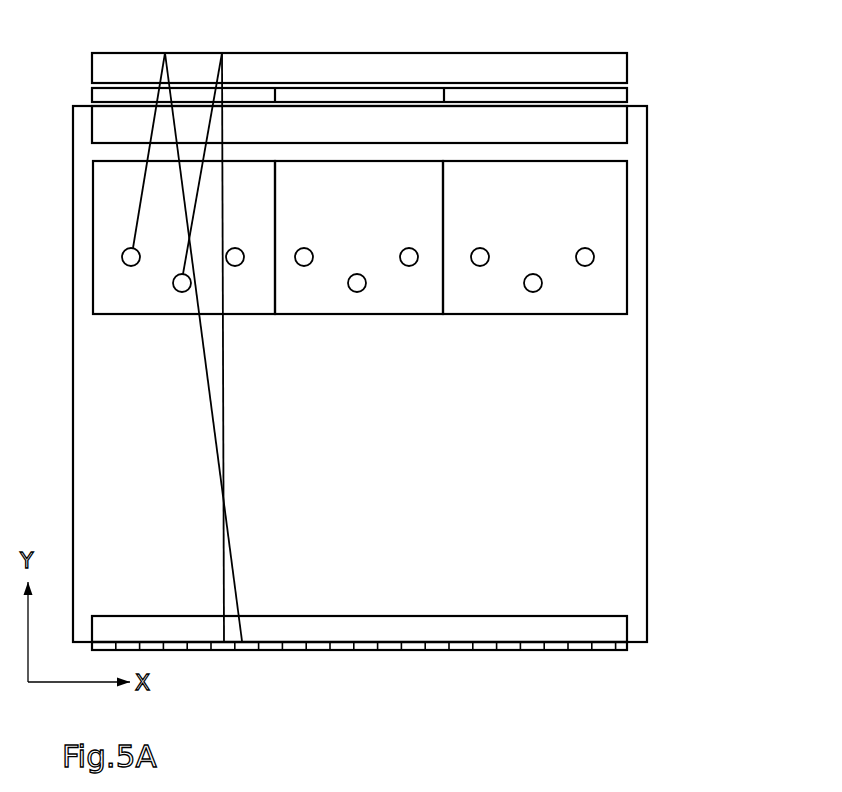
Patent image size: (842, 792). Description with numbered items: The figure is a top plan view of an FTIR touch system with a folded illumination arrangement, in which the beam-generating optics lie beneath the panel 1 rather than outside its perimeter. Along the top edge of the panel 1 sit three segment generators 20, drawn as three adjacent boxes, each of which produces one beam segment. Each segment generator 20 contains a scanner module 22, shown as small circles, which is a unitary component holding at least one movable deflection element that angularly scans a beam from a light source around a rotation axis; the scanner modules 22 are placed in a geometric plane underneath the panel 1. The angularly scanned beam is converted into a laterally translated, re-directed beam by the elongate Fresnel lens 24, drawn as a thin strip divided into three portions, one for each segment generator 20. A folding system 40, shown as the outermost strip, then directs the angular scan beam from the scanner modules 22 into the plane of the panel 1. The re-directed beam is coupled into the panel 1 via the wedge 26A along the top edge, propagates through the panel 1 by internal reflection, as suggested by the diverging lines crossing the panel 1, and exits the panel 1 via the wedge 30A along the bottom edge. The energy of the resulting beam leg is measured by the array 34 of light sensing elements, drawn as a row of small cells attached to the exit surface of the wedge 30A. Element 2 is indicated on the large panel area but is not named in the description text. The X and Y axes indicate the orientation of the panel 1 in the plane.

The panel 1 is at (411, 362).
The substrate / carrier body 2 is at (617, 508).
The segment generator 20 is at (253, 321).
The scanner module 22 is at (228, 264).
The Fresnel lens 24 is at (247, 95).
The wedge 26A is at (617, 123).
The wedge 30A is at (617, 627).
The array of light sensing elements 34 is at (580, 650).
The folding system 40 is at (617, 68).